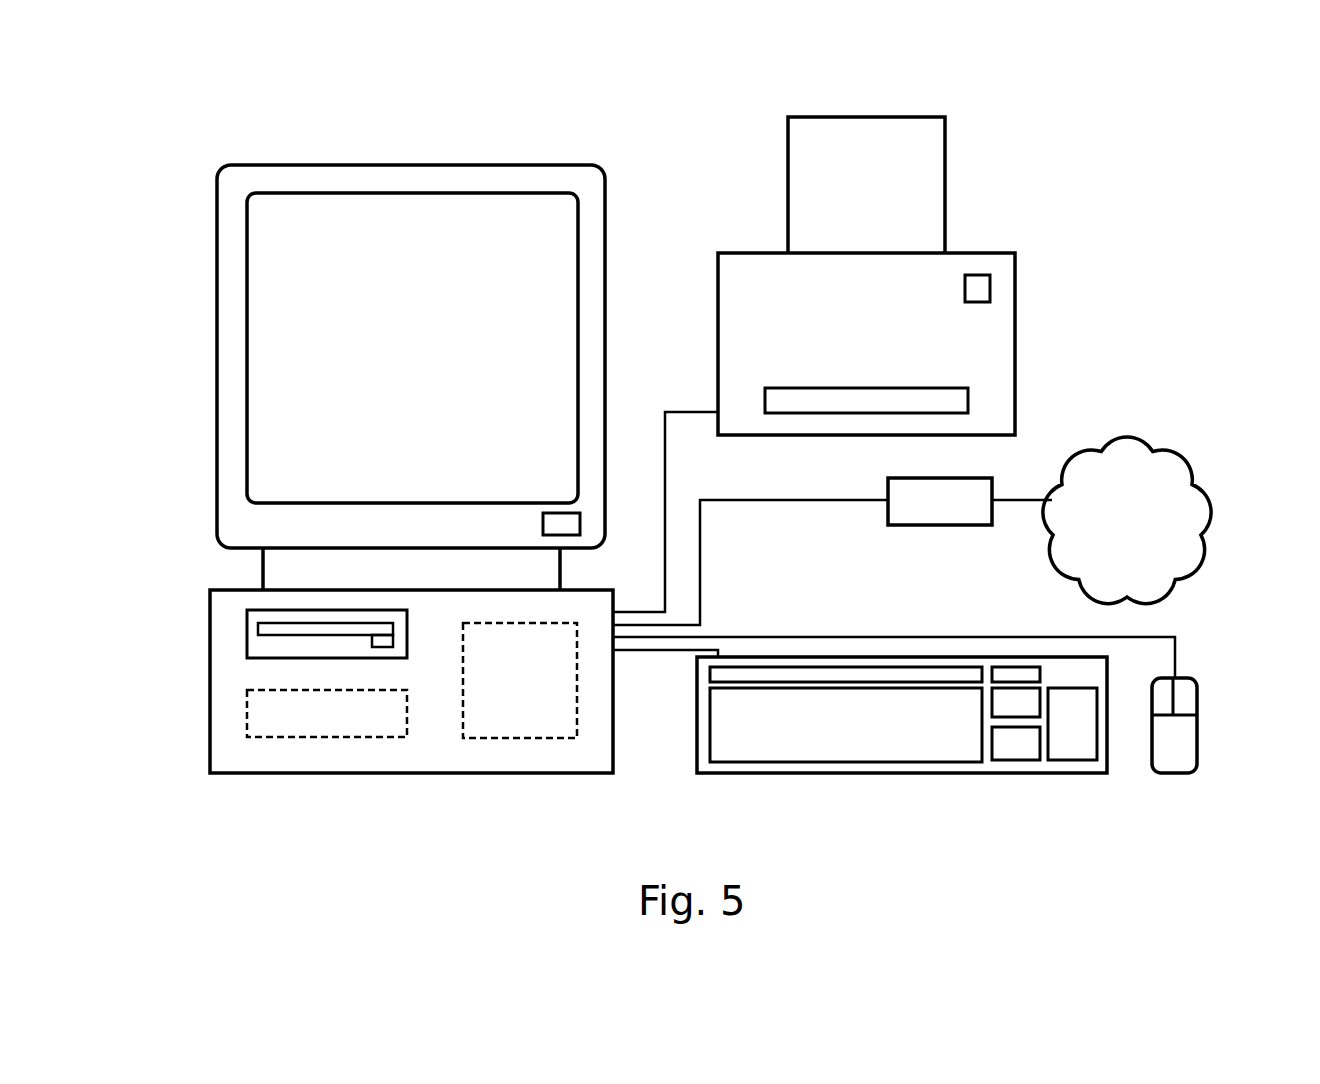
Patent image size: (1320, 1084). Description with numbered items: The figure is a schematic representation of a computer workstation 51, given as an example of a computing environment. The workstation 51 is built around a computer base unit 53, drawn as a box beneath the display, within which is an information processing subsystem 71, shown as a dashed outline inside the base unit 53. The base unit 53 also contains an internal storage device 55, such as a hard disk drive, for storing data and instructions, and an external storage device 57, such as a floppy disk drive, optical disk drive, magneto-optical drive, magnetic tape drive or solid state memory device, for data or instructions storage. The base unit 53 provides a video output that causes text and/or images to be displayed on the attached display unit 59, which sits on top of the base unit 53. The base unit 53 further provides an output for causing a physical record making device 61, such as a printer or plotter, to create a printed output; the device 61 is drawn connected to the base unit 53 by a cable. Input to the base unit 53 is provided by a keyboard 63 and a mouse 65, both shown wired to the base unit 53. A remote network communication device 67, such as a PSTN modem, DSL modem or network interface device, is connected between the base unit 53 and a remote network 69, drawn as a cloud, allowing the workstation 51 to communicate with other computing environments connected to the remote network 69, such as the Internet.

The computer workstation 51 is at (302, 132).
The computer base unit 53 is at (210, 677).
The internal storage device 55 is at (247, 712).
The external storage device 57 is at (247, 630).
The display unit 59 is at (217, 357).
The physical record making device 61 is at (1015, 298).
The keyboard 63 is at (725, 773).
The mouse 65 is at (1197, 710).
The remote network communication device 67 is at (975, 478).
The remote network 69 is at (1200, 462).
The information processing subsystem 71 is at (527, 740).